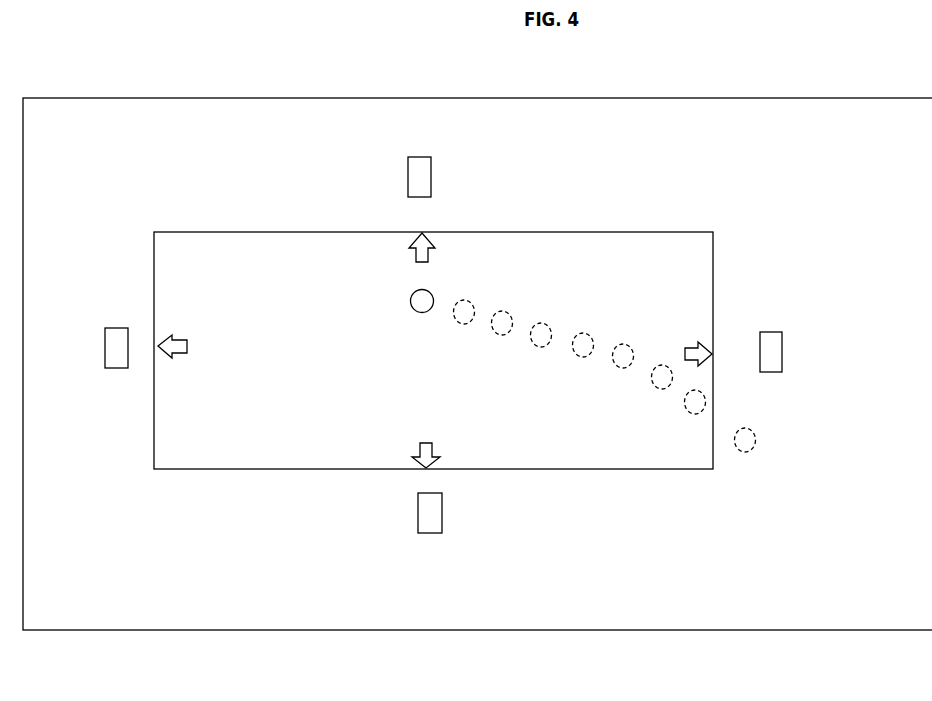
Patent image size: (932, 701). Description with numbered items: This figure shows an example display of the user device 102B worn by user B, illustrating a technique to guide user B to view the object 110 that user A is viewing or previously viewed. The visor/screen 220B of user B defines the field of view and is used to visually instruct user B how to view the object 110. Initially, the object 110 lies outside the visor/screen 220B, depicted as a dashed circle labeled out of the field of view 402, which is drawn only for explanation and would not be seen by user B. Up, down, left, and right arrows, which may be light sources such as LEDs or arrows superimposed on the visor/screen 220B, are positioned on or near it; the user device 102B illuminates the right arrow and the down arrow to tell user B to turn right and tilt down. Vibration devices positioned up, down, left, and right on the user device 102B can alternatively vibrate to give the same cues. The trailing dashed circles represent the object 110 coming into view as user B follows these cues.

The user device 102B is at (398, 96).
The visor/screen 220B is at (739, 188).
The object 110 is at (422, 300).
The out of the field of view 402 is at (753, 445).